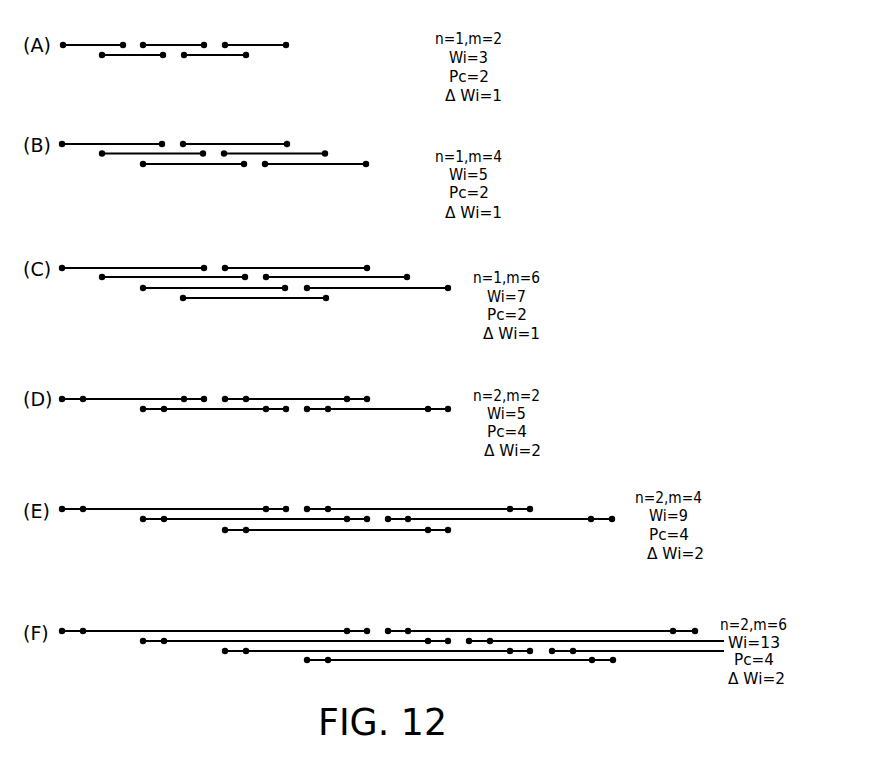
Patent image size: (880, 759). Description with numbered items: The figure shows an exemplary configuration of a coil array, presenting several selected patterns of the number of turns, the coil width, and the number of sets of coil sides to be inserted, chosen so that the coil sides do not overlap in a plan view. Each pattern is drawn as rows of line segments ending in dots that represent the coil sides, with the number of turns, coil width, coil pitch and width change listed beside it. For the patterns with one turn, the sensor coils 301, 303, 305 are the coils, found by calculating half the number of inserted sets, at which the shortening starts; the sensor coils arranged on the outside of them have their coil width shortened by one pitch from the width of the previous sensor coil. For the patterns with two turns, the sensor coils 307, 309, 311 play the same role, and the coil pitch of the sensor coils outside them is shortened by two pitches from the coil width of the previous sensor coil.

The sensor coil 301 is at (87, 43).
The sensor coil 303 is at (122, 155).
The sensor coil 305 is at (157, 291).
The sensor coil 307 is at (110, 398).
The sensor coil 309 is at (175, 521).
The sensor coil 311 is at (262, 652).